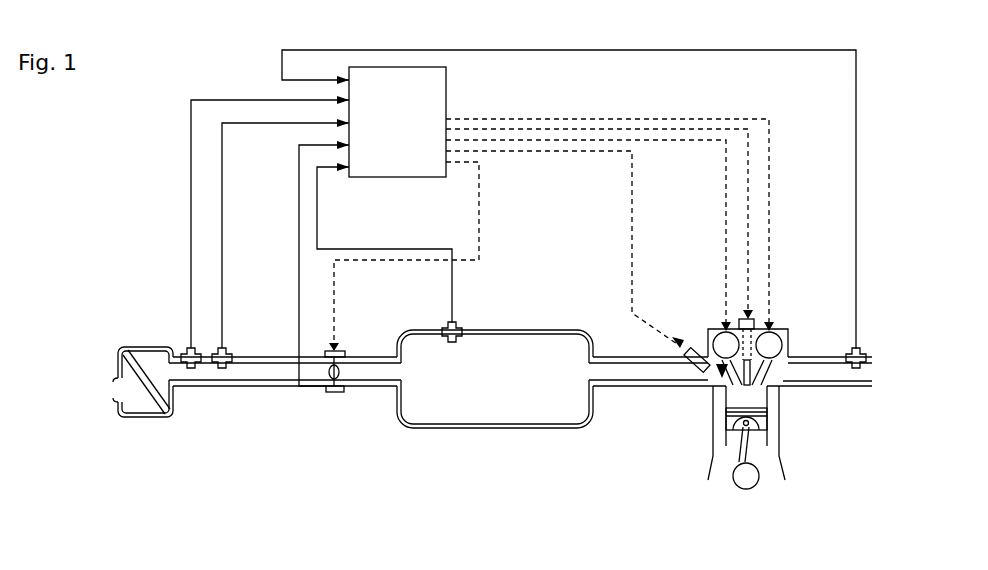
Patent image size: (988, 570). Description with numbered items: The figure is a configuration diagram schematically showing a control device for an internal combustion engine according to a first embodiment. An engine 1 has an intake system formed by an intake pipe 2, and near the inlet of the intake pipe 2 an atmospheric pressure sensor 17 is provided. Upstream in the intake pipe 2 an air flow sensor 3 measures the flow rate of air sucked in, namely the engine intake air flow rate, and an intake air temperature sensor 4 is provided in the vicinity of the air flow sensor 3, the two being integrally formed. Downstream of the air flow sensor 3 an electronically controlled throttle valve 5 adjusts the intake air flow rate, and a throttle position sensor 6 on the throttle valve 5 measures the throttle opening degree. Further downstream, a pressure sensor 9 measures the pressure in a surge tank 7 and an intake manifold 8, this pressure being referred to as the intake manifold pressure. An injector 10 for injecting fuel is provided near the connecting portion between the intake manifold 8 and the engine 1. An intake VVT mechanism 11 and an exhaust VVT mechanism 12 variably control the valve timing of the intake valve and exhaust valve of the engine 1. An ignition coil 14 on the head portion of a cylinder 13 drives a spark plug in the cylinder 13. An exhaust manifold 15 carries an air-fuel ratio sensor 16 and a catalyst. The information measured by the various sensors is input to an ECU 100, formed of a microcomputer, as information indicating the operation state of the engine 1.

The engine 1 is at (755, 383).
The intake pipe 2 is at (285, 404).
The air flow sensor 3 is at (217, 320).
The intake air temperature sensor 4 is at (242, 320).
The throttle valve 5 is at (353, 412).
The throttle position sensor 6 is at (353, 317).
The surge tank 7 is at (495, 415).
The intake manifold 8 is at (648, 408).
The pressure sensor 9 is at (473, 296).
The injector 10 is at (712, 404).
The intake VVT mechanism 11 is at (683, 323).
The exhaust VVT mechanism 12 is at (787, 312).
The cylinder 13 is at (718, 453).
The ignition coil 14 is at (765, 316).
The exhaust manifold 15 is at (825, 342).
The air-fuel ratio sensor 16 is at (878, 324).
The atmospheric pressure sensor 17 is at (177, 399).
The ECU 100 is at (523, 218).